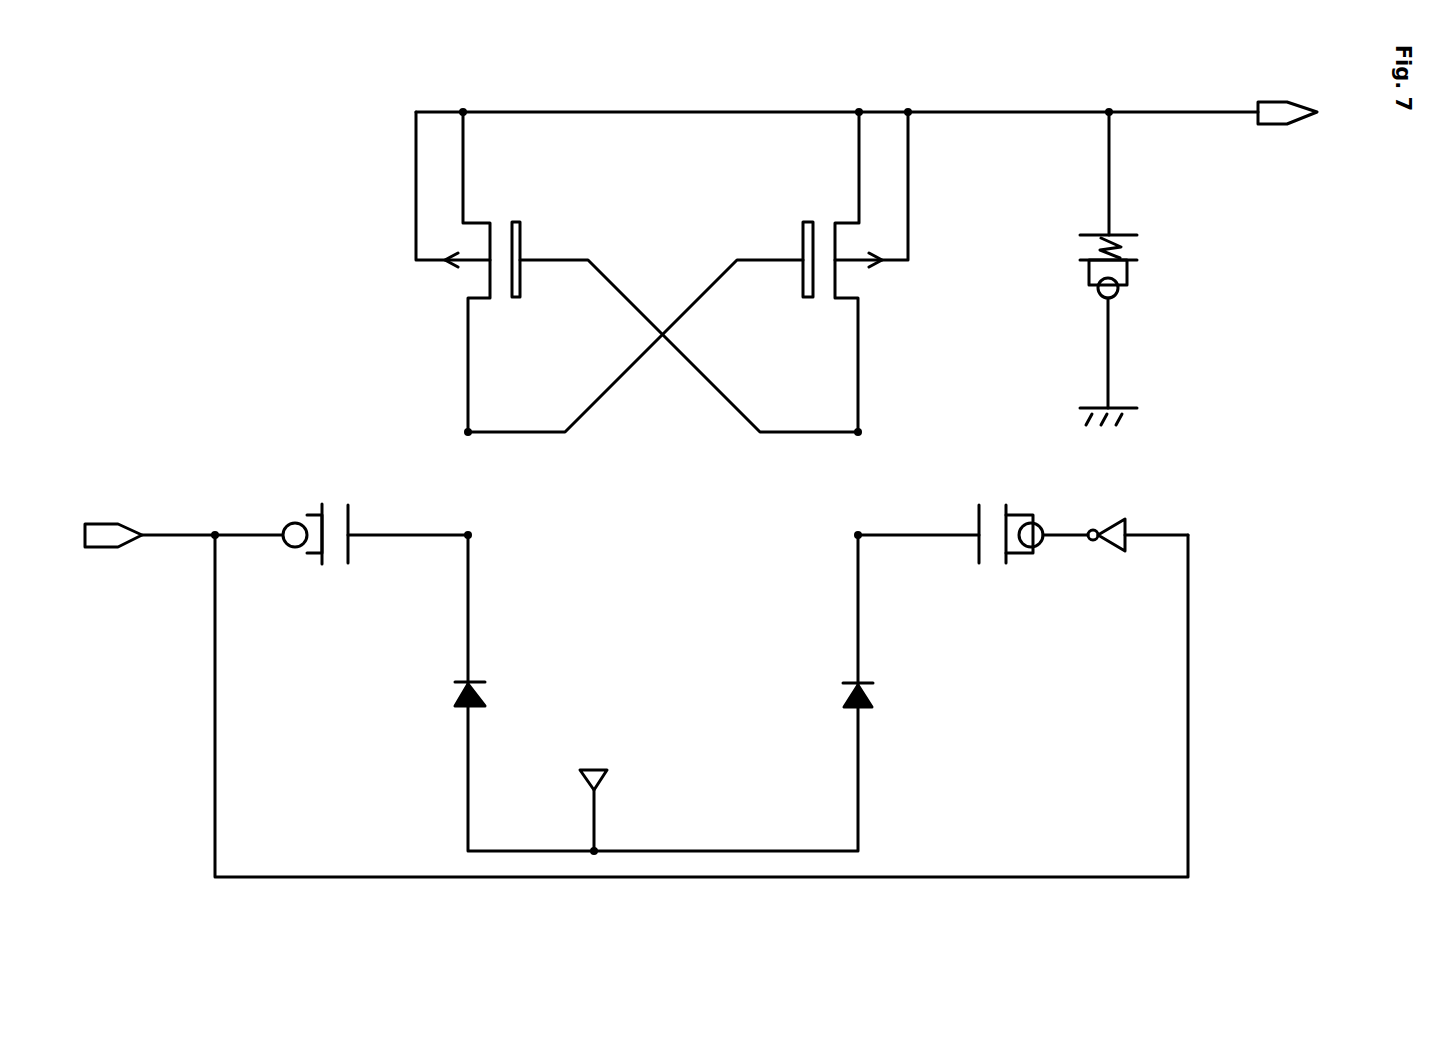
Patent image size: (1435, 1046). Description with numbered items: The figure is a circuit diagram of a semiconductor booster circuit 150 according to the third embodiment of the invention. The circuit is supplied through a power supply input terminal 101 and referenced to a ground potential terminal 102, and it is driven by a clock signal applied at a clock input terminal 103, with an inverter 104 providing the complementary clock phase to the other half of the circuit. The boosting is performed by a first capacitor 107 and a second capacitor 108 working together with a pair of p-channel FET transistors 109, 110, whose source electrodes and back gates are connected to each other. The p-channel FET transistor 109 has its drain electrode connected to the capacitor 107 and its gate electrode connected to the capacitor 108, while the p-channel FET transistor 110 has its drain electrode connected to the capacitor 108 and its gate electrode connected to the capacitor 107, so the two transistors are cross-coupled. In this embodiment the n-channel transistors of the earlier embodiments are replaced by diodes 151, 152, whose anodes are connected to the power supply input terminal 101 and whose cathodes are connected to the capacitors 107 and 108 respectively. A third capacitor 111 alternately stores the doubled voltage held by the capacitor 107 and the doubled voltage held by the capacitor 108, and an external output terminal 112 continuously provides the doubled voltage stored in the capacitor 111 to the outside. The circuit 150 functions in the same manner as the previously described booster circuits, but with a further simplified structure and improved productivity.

The power supply input terminal 101 is at (601, 782).
The ground potential terminal 102 is at (1110, 395).
The clock input terminal 103 is at (118, 546).
The inverter 104 is at (1115, 551).
The capacitor 107 is at (322, 504).
The capacitor 108 is at (992, 505).
The p-channel FET transistor 109 is at (465, 273).
The p-channel FET transistor 110 is at (862, 282).
The capacitor 111 is at (1137, 268).
The external output terminal 112 is at (1283, 125).
The semiconductor booster circuit 150 is at (1180, 73).
The diode 151 is at (462, 700).
The diode 152 is at (873, 700).